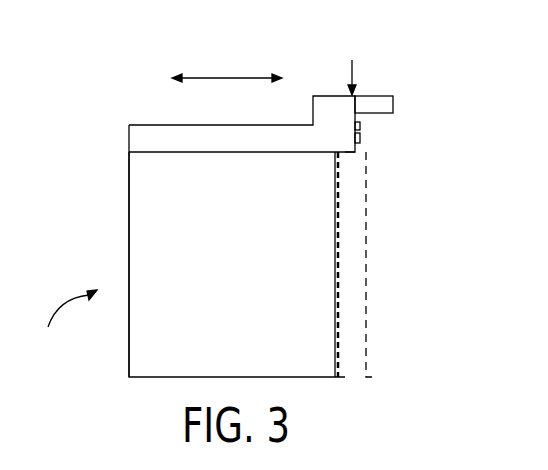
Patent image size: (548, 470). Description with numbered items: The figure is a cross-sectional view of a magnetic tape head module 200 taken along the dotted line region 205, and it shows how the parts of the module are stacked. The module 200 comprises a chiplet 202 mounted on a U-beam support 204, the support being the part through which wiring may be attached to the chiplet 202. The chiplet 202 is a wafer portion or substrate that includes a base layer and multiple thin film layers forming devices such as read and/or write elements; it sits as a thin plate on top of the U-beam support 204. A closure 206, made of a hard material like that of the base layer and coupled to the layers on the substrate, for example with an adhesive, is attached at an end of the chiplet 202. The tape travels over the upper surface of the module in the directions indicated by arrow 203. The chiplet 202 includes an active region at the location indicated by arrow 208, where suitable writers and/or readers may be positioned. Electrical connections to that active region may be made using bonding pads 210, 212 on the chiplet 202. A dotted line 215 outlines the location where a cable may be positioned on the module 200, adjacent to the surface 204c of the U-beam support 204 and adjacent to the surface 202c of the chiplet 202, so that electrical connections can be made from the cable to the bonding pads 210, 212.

The tape head module 200 is at (129, 165).
The chiplet 202 is at (204, 137).
The surface of the chiplet 202c is at (348, 153).
The arrow 203 is at (226, 77).
The U-beam support 204 is at (257, 254).
The surface of the U-beam support 204c is at (335, 327).
The dotted line region 205 is at (62, 328).
The closure 206 is at (393, 106).
The arrow 208 is at (356, 59).
The bonding pad 210 is at (360, 140).
The bonding pad 212 is at (360, 126).
The dotted line 215 is at (366, 296).